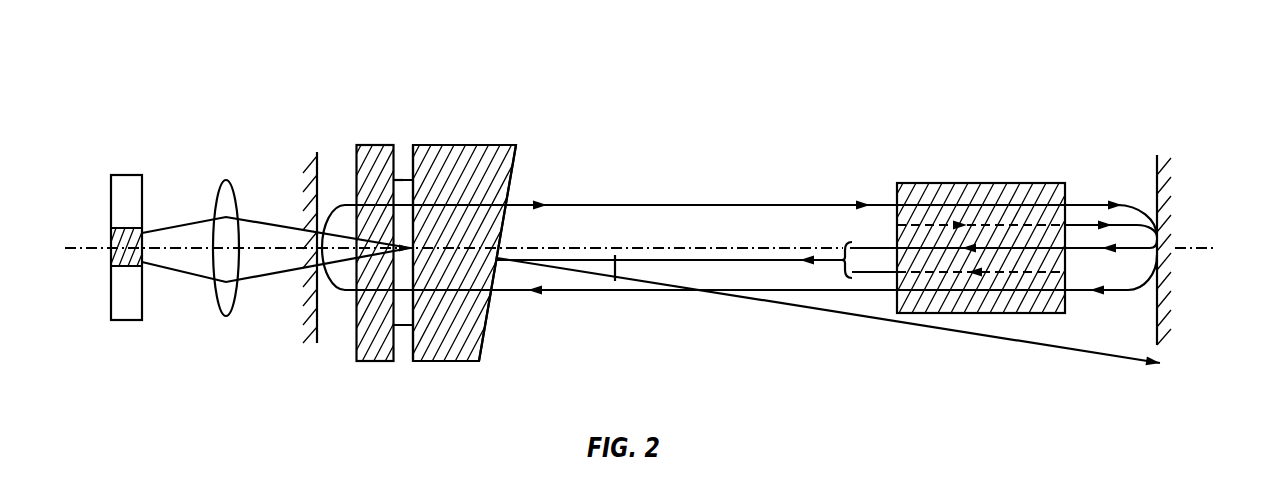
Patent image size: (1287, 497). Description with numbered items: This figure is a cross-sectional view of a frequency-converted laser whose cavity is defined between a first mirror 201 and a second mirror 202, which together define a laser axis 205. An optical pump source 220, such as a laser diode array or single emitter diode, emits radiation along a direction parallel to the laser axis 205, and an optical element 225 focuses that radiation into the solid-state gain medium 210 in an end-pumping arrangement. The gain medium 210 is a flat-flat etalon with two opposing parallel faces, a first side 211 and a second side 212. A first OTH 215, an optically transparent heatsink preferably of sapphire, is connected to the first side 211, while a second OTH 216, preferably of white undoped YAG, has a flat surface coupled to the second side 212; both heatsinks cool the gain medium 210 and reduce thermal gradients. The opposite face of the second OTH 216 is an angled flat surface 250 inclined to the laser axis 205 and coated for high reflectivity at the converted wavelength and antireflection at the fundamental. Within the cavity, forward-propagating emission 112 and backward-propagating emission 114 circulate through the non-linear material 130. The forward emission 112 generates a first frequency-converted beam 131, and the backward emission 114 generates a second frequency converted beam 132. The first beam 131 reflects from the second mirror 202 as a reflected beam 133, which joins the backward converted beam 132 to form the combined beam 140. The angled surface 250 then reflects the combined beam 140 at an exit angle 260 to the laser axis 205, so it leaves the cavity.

The forward-propagating emission 112 is at (662, 205).
The backward-propagating emission 114 is at (655, 292).
The non-linear material 130 is at (970, 184).
The first frequency-converted beam 131 is at (1052, 223).
The second frequency converted beam 132 is at (873, 272).
The reflected beam 133 is at (888, 247).
The combined beam 140 is at (725, 258).
The first mirror 201 is at (317, 152).
The second mirror 202 is at (1157, 170).
The laser axis 205 is at (82, 252).
The solid-state gain medium 210 is at (403, 180).
The first side 211 is at (393, 313).
The second side 212 is at (413, 310).
The first OTH 215 is at (388, 145).
The second OTH 216 is at (450, 145).
The optical pump source 220 is at (123, 175).
The optical element 225 is at (223, 180).
The angled flat surface 250 is at (513, 167).
The exit angle 260 is at (614, 281).